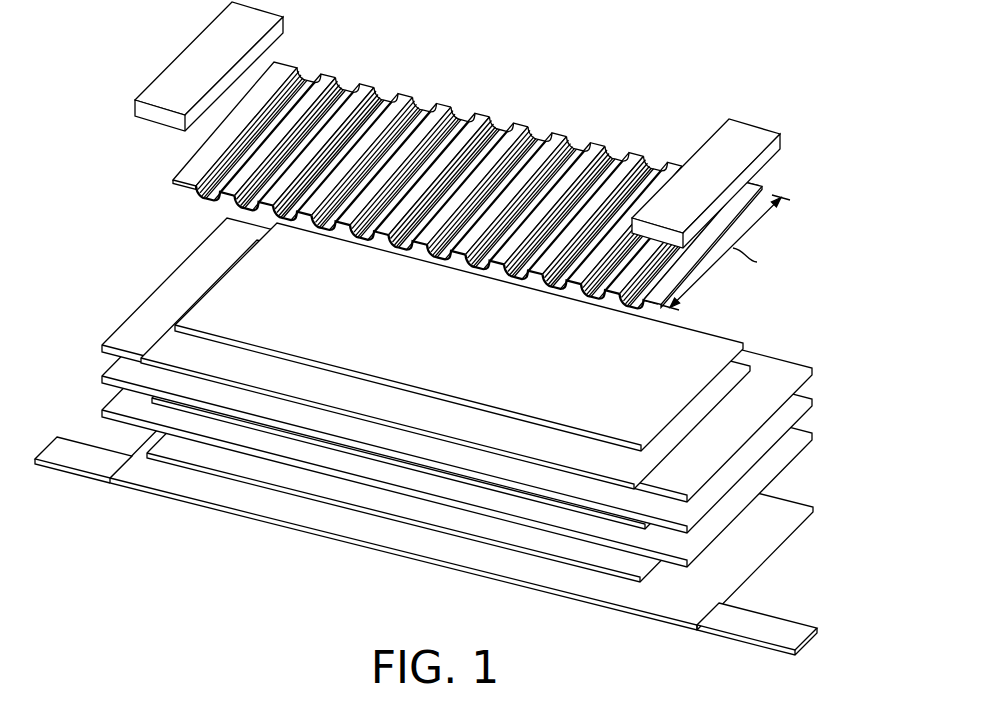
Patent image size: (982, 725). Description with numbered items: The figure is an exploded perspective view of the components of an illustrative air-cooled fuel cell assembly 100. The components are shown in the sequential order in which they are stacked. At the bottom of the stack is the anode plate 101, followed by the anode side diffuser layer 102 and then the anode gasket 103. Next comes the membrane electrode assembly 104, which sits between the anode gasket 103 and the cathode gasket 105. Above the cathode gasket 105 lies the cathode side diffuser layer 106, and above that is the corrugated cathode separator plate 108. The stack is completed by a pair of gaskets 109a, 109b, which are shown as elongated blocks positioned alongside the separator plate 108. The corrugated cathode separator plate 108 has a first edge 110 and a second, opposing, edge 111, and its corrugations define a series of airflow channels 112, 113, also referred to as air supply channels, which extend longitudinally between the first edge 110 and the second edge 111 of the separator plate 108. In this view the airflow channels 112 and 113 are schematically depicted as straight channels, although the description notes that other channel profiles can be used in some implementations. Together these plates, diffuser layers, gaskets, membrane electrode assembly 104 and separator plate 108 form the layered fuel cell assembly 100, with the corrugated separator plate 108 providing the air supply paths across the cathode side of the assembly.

The fuel cell assembly 100 is at (454, 327).
The anode plate 101 is at (788, 513).
The anode side diffuser layer 102 is at (198, 452).
The anode gasket 103 is at (798, 436).
The membrane electrode assembly 104 is at (798, 401).
The cathode gasket 105 is at (793, 372).
The cathode side diffuser layer 106 is at (712, 337).
The corrugated cathode separator plate 108 is at (439, 171).
The gasket 109a is at (745, 127).
The gasket 109b is at (252, 22).
The first edge 110 is at (210, 193).
The second edge 111 is at (350, 67).
The airflow channel 112 is at (400, 250).
The airflow channel 113 is at (520, 128).